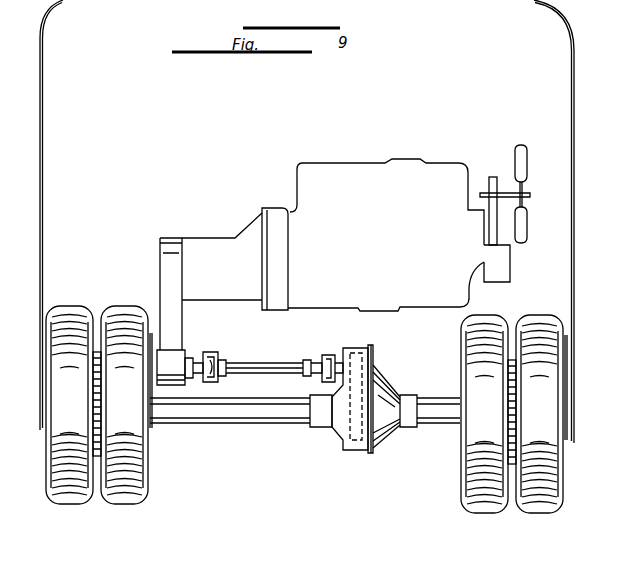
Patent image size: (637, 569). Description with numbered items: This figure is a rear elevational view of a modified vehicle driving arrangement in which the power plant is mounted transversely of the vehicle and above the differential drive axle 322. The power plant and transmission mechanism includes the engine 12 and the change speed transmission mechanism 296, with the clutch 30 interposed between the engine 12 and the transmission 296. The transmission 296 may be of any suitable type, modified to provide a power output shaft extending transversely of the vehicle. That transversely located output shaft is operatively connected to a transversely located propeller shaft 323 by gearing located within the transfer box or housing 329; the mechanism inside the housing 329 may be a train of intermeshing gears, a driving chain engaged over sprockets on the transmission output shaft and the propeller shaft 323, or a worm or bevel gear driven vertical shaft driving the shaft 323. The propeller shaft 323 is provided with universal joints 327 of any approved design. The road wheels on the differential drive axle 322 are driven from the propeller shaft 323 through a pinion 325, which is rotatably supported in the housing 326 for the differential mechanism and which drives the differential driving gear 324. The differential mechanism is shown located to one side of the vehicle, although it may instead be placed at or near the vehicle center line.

The engine 12 is at (369, 183).
The clutch 30 is at (277, 209).
The change speed transmission mechanism 296 is at (220, 248).
The transfer box or housing 329 is at (161, 291).
The universal joints 327 is at (208, 352).
The propeller shaft 323 is at (273, 365).
The differential drive axle 322 is at (243, 421).
The differential driving gear 324 is at (347, 446).
The pinion 325 is at (366, 352).
The housing for the differential mechanism 326 is at (383, 431).